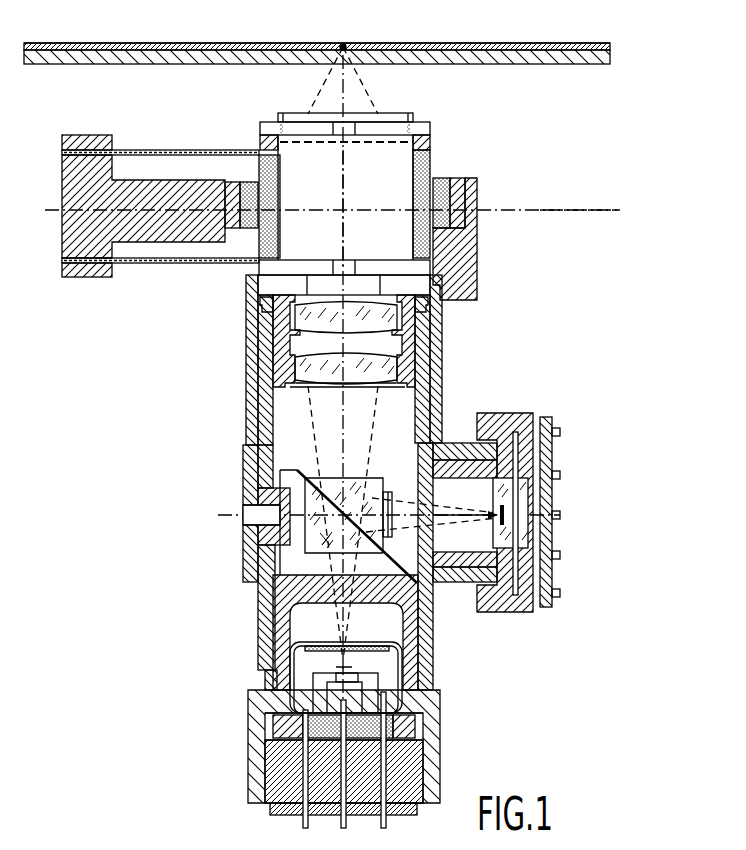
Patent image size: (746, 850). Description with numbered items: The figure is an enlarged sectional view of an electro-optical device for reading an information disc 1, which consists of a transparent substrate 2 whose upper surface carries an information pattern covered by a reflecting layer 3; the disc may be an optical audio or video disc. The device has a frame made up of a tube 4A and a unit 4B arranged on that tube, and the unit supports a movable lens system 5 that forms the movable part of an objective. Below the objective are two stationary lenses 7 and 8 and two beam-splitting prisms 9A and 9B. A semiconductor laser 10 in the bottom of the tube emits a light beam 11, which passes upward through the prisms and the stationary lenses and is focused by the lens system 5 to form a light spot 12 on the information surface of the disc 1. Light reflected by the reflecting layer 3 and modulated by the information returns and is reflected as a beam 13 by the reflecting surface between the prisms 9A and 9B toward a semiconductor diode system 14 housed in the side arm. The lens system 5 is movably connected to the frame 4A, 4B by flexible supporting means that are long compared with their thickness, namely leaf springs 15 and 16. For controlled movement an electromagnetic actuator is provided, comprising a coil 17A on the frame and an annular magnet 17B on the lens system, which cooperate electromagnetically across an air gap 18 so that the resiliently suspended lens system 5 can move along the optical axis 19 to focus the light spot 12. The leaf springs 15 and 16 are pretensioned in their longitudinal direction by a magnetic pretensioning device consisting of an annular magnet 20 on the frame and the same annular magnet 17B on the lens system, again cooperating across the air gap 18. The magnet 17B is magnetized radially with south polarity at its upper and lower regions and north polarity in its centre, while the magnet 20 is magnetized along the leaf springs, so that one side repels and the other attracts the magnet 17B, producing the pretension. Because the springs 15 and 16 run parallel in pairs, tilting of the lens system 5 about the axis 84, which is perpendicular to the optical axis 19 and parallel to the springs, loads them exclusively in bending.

The information disc 1 is at (52, 44).
The transparent substrate 2 is at (524, 63).
The reflecting layer 3 is at (514, 43).
The tube 4A is at (258, 611).
The unit 4B is at (252, 334).
The movable lens system 5 is at (398, 157).
The stationary lens 7 is at (392, 322).
The stationary lens 8 is at (392, 372).
The beam-splitting prism 9A is at (312, 542).
The beam-splitting prism 9B is at (377, 482).
The semiconductor laser 10 is at (348, 668).
The light beam 11 is at (368, 404).
The light spot 12 is at (343, 46).
The beam 13 is at (508, 533).
The semiconductor diode system 14 is at (503, 510).
The leaf spring 15 is at (171, 213).
The leaf spring 16 is at (203, 263).
The coil 17A is at (446, 160).
The annular magnet 17B is at (430, 173).
The air gap 18 is at (433, 203).
The optical axis 19 is at (343, 182).
The annular magnet 20 is at (457, 221).
The axis 84 is at (557, 209).